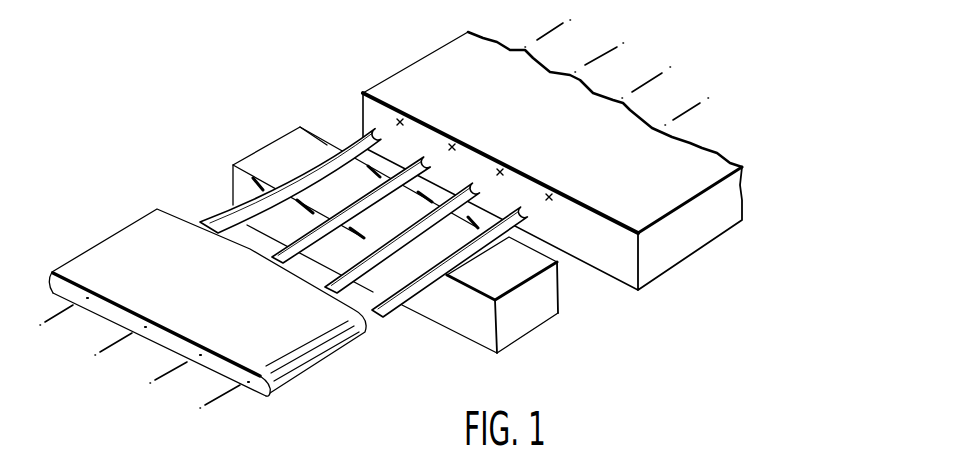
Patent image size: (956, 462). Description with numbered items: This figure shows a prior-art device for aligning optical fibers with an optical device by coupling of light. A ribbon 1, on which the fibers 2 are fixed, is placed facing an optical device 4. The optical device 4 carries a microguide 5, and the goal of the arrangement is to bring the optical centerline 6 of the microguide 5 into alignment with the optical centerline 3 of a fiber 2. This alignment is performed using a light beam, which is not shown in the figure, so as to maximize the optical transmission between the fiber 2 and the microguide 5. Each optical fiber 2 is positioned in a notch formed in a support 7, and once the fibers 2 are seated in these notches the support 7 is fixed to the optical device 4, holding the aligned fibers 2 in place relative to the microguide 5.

The ribbon 1 is at (117, 250).
The fibers 2 is at (217, 220).
The optical centerline of a fiber 3 is at (73, 305).
The optical device 4 is at (698, 233).
The microguide 5 is at (397, 122).
The optical centerline of the microguide 6 is at (550, 38).
The support 7 is at (537, 317).